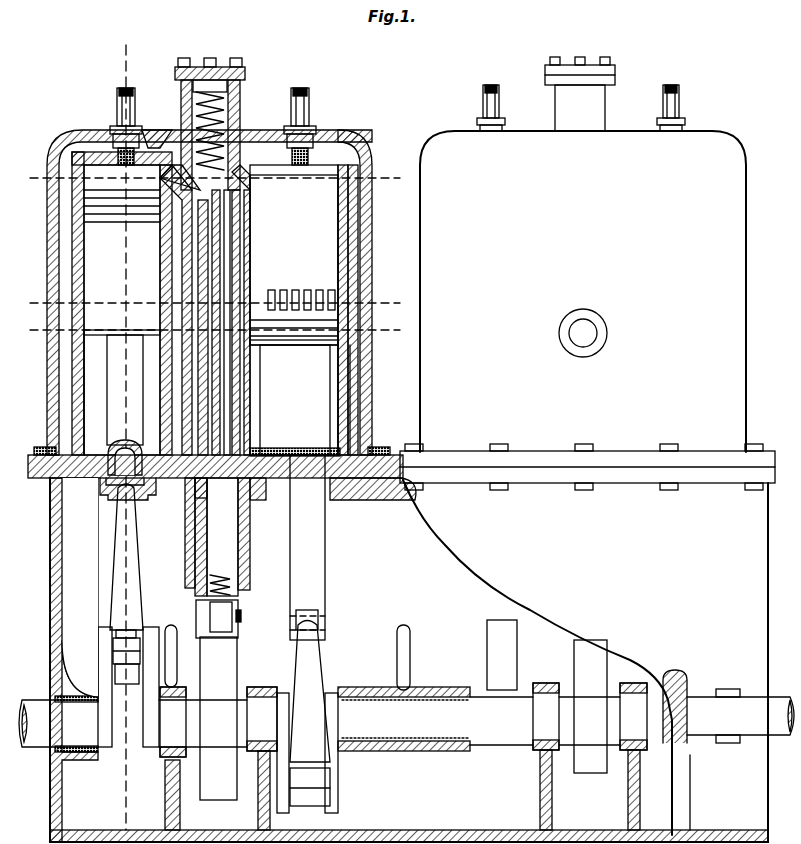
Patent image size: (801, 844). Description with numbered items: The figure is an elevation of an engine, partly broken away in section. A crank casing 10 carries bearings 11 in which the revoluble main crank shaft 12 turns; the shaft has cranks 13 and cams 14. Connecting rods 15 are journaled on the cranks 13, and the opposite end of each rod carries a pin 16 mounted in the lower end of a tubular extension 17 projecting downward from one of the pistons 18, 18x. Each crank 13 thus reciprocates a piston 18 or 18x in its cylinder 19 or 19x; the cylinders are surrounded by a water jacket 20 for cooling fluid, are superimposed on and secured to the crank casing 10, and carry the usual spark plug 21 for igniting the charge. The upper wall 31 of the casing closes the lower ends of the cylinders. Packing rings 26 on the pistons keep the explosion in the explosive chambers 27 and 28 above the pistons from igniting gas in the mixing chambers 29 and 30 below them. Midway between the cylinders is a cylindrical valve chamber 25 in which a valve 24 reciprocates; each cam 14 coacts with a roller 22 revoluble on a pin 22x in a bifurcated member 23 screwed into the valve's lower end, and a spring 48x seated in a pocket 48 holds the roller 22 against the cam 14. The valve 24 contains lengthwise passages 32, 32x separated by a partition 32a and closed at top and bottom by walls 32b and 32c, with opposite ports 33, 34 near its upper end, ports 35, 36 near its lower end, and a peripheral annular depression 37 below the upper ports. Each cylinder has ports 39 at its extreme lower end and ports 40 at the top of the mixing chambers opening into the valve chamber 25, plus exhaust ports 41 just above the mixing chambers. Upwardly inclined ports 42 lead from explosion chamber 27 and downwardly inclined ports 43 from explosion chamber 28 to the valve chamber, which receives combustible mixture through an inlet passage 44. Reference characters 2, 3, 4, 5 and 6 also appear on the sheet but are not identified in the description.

The spark plug axis 2 is at (120, 437).
The section line 3 is at (211, 179).
The section line 4 is at (211, 304).
The section line 5 is at (211, 331).
The cylinder block flange 6 is at (52, 453).
The crank casing 10 is at (52, 578).
The bearings 11 is at (52, 748).
The main crank shaft 12 is at (438, 750).
The cranks 13 is at (100, 632).
The cams 14 is at (218, 788).
The connecting rods 15 is at (126, 578).
The pin 16 is at (100, 492).
The tubular extension 17 is at (106, 388).
The piston 18 is at (84, 247).
The piston 18x is at (340, 385).
The cylinder 19 is at (84, 415).
The cylinder 19x is at (350, 275).
The water jacket 20 is at (358, 247).
The spark plug 21 is at (114, 110).
The roller 22 is at (232, 604).
The pin 22x is at (242, 618).
The bifurcated member 23 is at (196, 610).
The valve 24 is at (252, 282).
The cylindrical valve chamber 25 is at (240, 98).
The packing rings 26 is at (84, 208).
The explosive chamber 27 is at (62, 160).
The explosive chamber 28 is at (358, 140).
The mixing chamber 29 is at (90, 372).
The mixing chamber 30 is at (352, 420).
The upper wall 31 is at (352, 485).
The passage 32 is at (190, 262).
The partition 32a is at (252, 276).
The wall 32b is at (228, 124).
The wall 32c is at (186, 510).
The passage 32x is at (284, 244).
The port 33 is at (172, 225).
The port 34 is at (252, 200).
The port 35 is at (150, 440).
The port 36 is at (262, 445).
The peripheral annular depression 37 is at (252, 240).
The ports 39 is at (184, 491).
The ports 40 is at (148, 330).
The exhaust ports 41 is at (300, 290).
The ports 42 is at (158, 136).
The ports 43 is at (262, 183).
The inlet passage 44 is at (592, 330).
The pocket 48 is at (192, 67).
The spring 48x is at (222, 78).